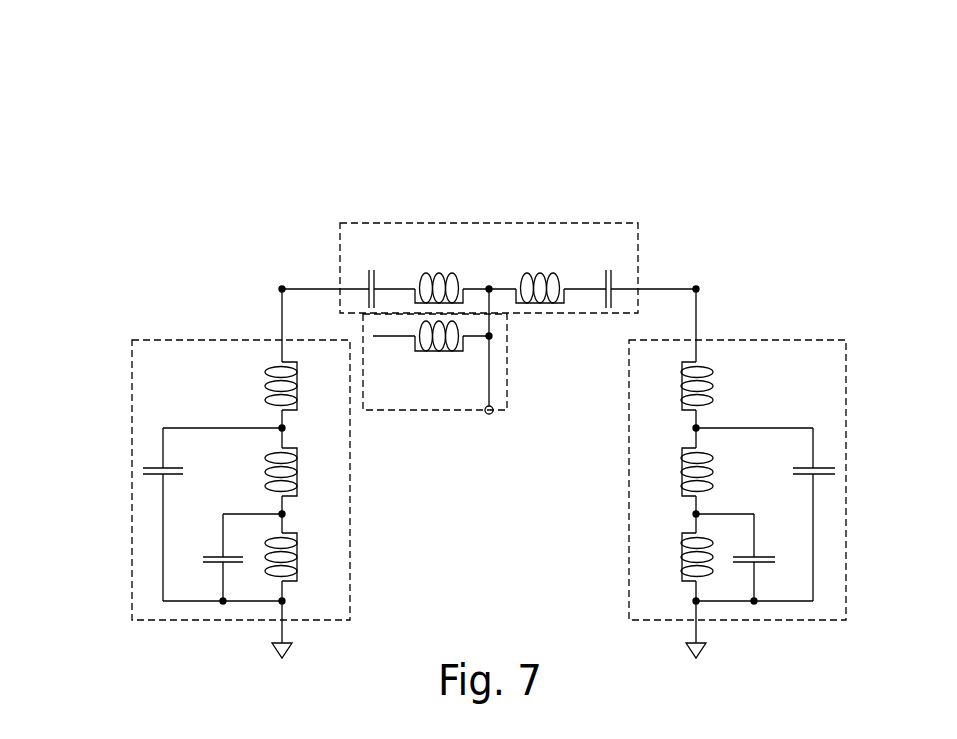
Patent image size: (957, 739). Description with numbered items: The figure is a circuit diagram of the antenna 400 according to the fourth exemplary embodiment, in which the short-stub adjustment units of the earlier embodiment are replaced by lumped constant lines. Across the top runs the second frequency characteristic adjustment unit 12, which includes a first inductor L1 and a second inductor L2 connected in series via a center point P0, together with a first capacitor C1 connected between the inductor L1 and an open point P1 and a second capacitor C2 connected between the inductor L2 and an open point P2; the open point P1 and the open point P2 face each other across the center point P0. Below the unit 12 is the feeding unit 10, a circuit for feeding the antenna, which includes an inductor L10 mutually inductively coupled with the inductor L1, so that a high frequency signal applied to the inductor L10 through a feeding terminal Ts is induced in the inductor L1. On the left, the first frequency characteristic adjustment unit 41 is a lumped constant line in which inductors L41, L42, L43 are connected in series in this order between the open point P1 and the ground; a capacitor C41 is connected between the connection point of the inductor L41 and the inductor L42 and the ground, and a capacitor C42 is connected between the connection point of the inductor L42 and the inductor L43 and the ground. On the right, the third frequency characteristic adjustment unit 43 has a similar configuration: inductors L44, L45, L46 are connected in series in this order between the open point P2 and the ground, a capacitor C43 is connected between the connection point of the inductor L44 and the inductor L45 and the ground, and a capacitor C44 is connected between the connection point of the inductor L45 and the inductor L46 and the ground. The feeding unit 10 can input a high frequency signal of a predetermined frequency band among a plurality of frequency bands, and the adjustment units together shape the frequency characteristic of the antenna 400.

The antenna 400 is at (488, 100).
The second frequency characteristic adjustment unit 12 is at (578, 222).
The feeding unit 10 is at (421, 411).
The first frequency characteristic adjustment unit 41 is at (130, 366).
The third frequency characteristic adjustment unit 43 is at (848, 370).
The open point P1 is at (282, 284).
The open point P2 is at (696, 284).
The center point P0 is at (490, 292).
The feeding terminal Ts is at (492, 414).
The first capacitor C1 is at (370, 271).
The second capacitor C2 is at (607, 271).
The first inductor L1 is at (439, 268).
The second inductor L2 is at (540, 268).
The inductor L10 is at (439, 354).
The inductor L41 is at (302, 386).
The inductor L42 is at (302, 472).
The inductor L43 is at (302, 557).
The capacitor C41 is at (183, 514).
The capacitor C42 is at (211, 557).
The inductor L44 is at (675, 386).
The inductor L45 is at (675, 472).
The inductor L46 is at (675, 557).
The capacitor C43 is at (793, 514).
The capacitor C44 is at (765, 557).